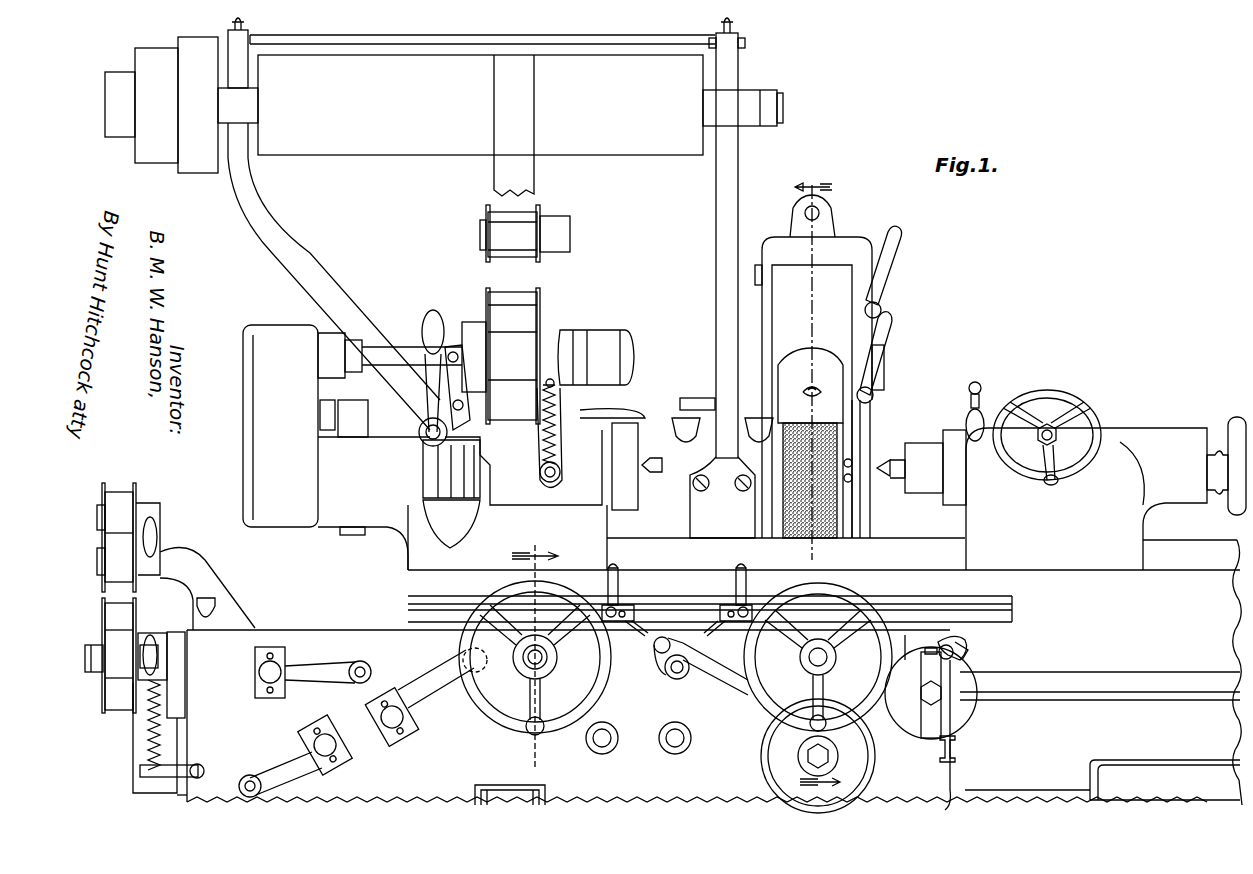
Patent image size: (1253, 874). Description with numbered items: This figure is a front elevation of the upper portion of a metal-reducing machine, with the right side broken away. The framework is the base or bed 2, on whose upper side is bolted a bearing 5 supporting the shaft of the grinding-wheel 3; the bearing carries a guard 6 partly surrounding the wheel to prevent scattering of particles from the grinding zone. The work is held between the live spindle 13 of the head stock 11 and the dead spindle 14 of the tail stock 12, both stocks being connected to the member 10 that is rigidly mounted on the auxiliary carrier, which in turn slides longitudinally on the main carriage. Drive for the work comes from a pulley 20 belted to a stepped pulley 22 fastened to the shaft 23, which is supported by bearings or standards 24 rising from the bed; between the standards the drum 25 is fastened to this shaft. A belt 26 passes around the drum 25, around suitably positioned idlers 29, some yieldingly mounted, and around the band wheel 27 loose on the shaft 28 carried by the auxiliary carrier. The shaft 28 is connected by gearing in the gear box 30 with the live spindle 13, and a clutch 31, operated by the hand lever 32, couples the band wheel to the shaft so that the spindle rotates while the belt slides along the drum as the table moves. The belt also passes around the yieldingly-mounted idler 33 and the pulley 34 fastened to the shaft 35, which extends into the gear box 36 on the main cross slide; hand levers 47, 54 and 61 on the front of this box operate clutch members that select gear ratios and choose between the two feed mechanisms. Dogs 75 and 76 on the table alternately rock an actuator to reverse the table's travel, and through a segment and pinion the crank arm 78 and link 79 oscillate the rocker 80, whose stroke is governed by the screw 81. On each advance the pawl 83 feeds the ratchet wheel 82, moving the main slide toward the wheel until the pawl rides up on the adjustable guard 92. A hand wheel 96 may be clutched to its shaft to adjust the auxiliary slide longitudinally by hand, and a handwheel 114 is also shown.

The base or bed 2 is at (1130, 798).
The grinding-wheel 3 is at (842, 447).
The bearing 5 is at (876, 452).
The guard 6 is at (762, 236).
The member 10 is at (1218, 592).
The head stock 11 is at (605, 530).
The tail stock 12 is at (968, 520).
The live spindle 13 is at (645, 462).
The dead spindle 14 is at (898, 470).
The pulley 20 is at (133, 745).
The stepped pulley 22 is at (162, 50).
The shaft 23 is at (784, 108).
The bearings or standards 24 is at (300, 235).
The drum 25 is at (614, 155).
The belt 26 is at (537, 178).
The band wheel 27 is at (488, 297).
The shaft 28 is at (392, 347).
The idlers 29 is at (487, 216).
The gear box 30 is at (243, 389).
The clutch 31 is at (474, 325).
The hand lever 32 is at (430, 400).
The idler 33 is at (118, 685).
The pulley 34 is at (118, 615).
The shaft 35 is at (92, 655).
The gear box 36 is at (185, 795).
The hand lever 47 is at (290, 770).
The hand lever 54 is at (310, 667).
The hand lever 61 is at (430, 695).
The dog 75 is at (630, 604).
The dog 76 is at (726, 604).
The crank arm 78 is at (656, 662).
The link 79 is at (724, 672).
The rocker 80 is at (957, 656).
The screw 81 is at (957, 745).
The ratchet wheel 82 is at (952, 706).
The pawl 83 is at (962, 640).
The adjustable guard 92 is at (905, 635).
The hand wheel 96 is at (552, 733).
The handwheel 114 is at (768, 718).